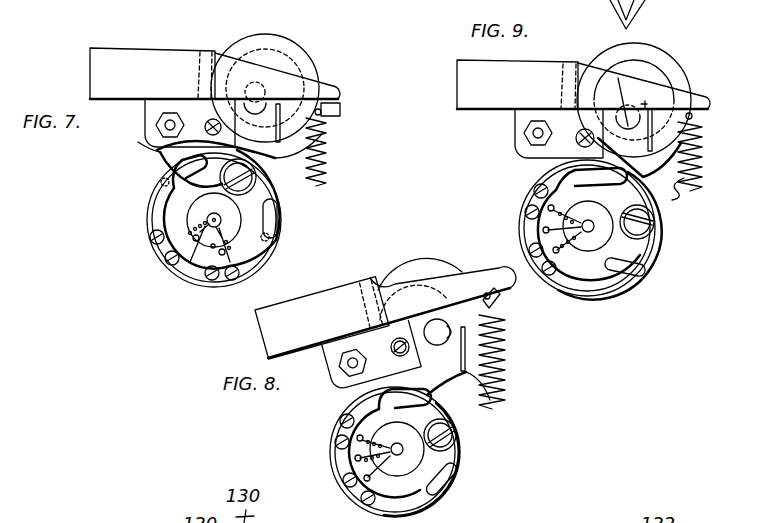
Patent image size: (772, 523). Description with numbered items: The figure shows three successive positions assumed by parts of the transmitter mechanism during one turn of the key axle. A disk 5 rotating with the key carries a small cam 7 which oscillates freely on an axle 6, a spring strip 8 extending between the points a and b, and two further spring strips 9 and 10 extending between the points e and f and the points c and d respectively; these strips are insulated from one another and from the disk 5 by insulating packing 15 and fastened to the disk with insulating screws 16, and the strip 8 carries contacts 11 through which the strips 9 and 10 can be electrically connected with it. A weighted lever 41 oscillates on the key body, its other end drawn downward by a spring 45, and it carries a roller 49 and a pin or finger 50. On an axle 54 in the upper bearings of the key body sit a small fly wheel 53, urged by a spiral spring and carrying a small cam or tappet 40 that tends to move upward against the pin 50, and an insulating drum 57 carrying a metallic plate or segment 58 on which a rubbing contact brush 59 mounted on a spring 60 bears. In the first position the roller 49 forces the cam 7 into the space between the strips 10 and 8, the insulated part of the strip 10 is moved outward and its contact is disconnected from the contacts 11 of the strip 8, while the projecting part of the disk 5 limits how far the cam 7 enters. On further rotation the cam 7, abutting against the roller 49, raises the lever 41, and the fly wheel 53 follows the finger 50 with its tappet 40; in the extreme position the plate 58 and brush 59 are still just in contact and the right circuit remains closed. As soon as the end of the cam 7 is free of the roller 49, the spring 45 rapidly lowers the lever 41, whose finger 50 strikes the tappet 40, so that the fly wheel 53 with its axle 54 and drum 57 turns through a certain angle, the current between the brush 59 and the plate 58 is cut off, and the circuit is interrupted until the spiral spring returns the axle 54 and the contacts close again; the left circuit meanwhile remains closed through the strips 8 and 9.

In FIG. 7, the disk 5 is at (272, 195).
In FIG. 9, the disk 5 is at (641, 264).
In FIG. 8, the disk 5 is at (458, 455).
In FIG. 7, the axle 6 is at (257, 177).
In FIG. 9, the axle 6 is at (648, 236).
In FIG. 8, the axle 6 is at (456, 437).
In FIG. 9, the small cam 7 is at (648, 204).
In FIG. 8, the small cam 7 is at (445, 392).
In FIG. 7, the spring strip 8 is at (155, 202).
In FIG. 9, the spring strip 8 is at (600, 234).
In FIG. 8, the spring strip 8 is at (362, 396).
In FIG. 7, the spring strip 9 is at (278, 217).
In FIG. 9, the spring strip 9 is at (625, 267).
In FIG. 8, the spring strip 9 is at (443, 480).
In FIG. 7, the spring strip 10 is at (178, 265).
In FIG. 7, the contacts 11 is at (160, 183).
In FIG. 7, the insulating packing 15 is at (150, 236).
In FIG. 9, the insulating packing 15 is at (540, 229).
In FIG. 8, the insulating packing 15 is at (355, 459).
In FIG. 7, the insulating screws 16 is at (185, 230).
In FIG. 9, the insulating screws 16 is at (562, 229).
In FIG. 8, the insulating screws 16 is at (372, 458).
In FIG. 7, the cam or tappet 40 is at (341, 107).
In FIG. 9, the cam or tappet 40 is at (693, 192).
In FIG. 8, the cam or tappet 40 is at (509, 292).
In FIG. 7, the lever 41 is at (214, 97).
In FIG. 9, the lever 41 is at (582, 109).
In FIG. 8, the lever 41 is at (382, 338).
In FIG. 7, the spring 45 is at (330, 141).
In FIG. 9, the spring 45 is at (703, 141).
In FIG. 8, the spring 45 is at (506, 366).
In FIG. 7, the roller 49 is at (222, 128).
In FIG. 9, the roller 49 is at (556, 158).
In FIG. 8, the roller 49 is at (400, 347).
In FIG. 7, the pin or finger 50 is at (340, 92).
In FIG. 9, the pin or finger 50 is at (644, 86).
In FIG. 8, the pin or finger 50 is at (503, 270).
In FIG. 7, the fly wheel 53 is at (300, 46).
In FIG. 9, the fly wheel 53 is at (674, 74).
In FIG. 8, the fly wheel 53 is at (443, 266).
In FIG. 7, the axle 54 is at (258, 82).
In FIG. 8, the axle 54 is at (437, 342).
In FIG. 9, the drum 57 is at (622, 92).
In FIG. 9, the metallic plate or segment 58 is at (631, 125).
In FIG. 8, the metallic plate or segment 58 is at (447, 328).
In FIG. 9, the rubbing contact brush 59 is at (650, 130).
In FIG. 8, the rubbing contact brush 59 is at (466, 331).
In FIG. 7, the spring 60 is at (239, 148).
In FIG. 9, the spring 60 is at (639, 157).
In FIG. 8, the spring 60 is at (458, 379).
In FIG. 7, the point a is at (169, 163).
In FIG. 7, the point b is at (273, 233).
In FIG. 7, the point c is at (137, 134).
In FIG. 7, the point d is at (180, 268).
In FIG. 7, the point e is at (208, 216).
In FIG. 7, the point f is at (198, 272).
In FIG. 7, the arm g is at (208, 272).